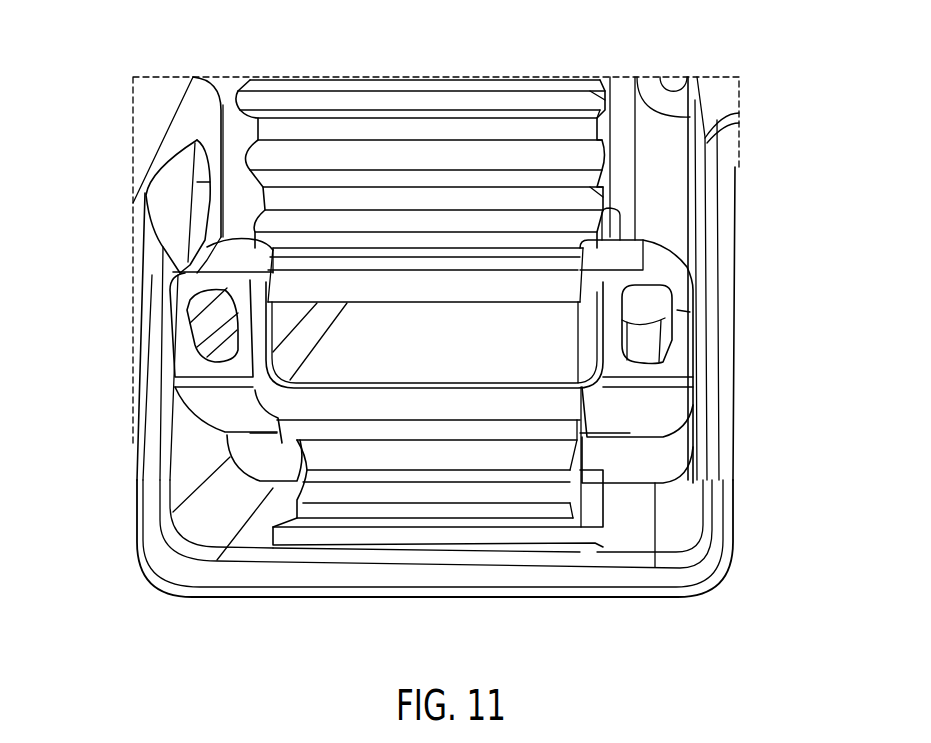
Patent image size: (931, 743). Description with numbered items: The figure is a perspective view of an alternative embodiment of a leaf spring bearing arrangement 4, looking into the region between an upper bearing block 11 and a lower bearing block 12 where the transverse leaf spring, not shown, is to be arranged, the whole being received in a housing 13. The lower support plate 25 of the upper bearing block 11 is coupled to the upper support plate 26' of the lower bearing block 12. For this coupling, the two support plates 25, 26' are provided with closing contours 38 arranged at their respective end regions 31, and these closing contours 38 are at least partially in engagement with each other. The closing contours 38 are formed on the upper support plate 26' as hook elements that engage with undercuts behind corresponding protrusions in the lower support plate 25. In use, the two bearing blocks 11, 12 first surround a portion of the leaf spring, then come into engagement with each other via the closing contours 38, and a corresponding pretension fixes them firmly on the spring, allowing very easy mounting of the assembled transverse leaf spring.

The fitting arrangement 4 is at (760, 166).
The upper bellows connector 11 is at (427, 128).
The lower bellows connector 12 is at (363, 512).
The housing 13 is at (190, 565).
The opening in side tab 25 is at (677, 312).
The lower lug 26' is at (685, 457).
The side wall 31 is at (123, 347).
The side tab with hole 38 is at (181, 359).